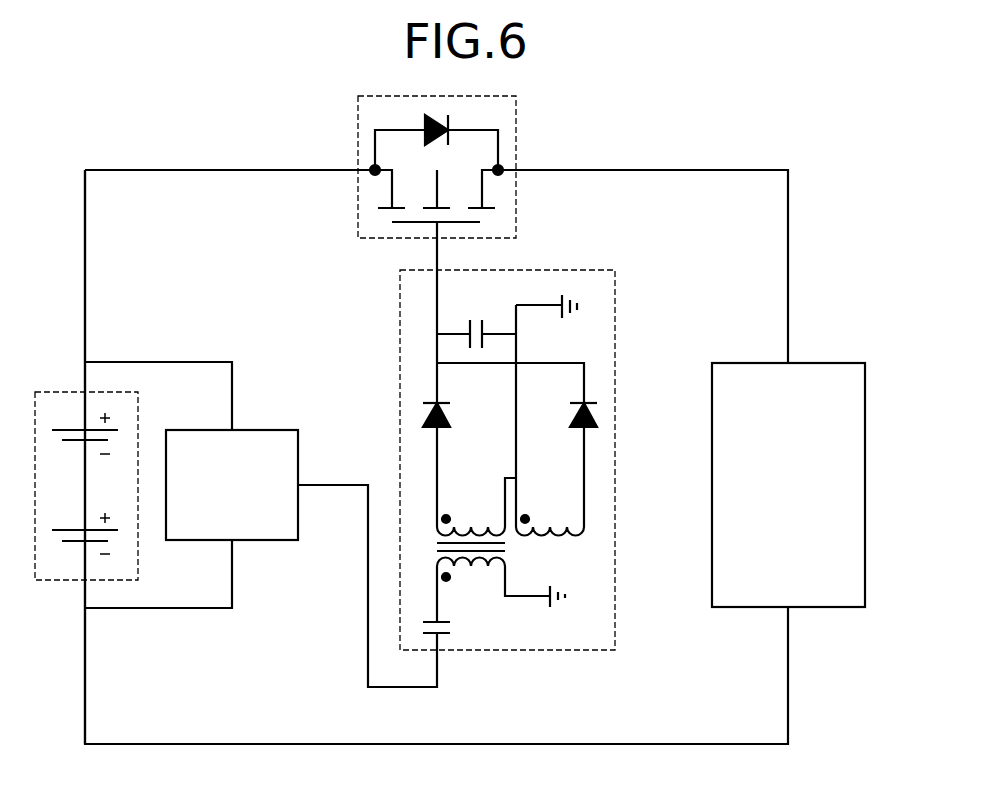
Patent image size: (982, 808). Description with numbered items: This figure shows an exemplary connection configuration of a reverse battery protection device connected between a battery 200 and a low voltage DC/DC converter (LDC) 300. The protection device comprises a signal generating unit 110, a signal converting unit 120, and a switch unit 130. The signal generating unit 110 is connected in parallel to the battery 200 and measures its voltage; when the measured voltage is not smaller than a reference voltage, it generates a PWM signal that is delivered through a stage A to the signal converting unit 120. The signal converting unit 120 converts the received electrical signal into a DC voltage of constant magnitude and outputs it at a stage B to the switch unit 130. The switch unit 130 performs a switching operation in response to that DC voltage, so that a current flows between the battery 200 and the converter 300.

The signal generating unit 110 is at (272, 430).
The signal converting unit 120 is at (615, 603).
The switch unit 130 is at (516, 130).
The battery 200 is at (61, 392).
The low voltage DC/DC converter (LDC) 300 is at (829, 363).